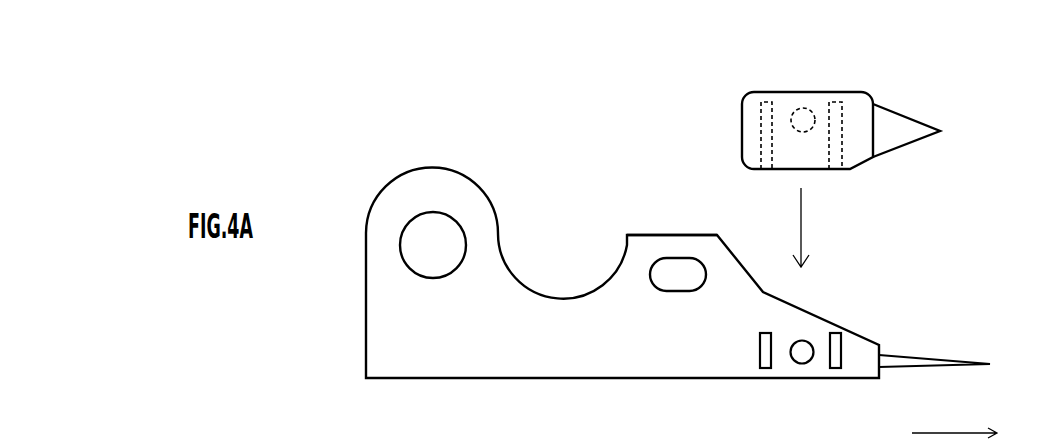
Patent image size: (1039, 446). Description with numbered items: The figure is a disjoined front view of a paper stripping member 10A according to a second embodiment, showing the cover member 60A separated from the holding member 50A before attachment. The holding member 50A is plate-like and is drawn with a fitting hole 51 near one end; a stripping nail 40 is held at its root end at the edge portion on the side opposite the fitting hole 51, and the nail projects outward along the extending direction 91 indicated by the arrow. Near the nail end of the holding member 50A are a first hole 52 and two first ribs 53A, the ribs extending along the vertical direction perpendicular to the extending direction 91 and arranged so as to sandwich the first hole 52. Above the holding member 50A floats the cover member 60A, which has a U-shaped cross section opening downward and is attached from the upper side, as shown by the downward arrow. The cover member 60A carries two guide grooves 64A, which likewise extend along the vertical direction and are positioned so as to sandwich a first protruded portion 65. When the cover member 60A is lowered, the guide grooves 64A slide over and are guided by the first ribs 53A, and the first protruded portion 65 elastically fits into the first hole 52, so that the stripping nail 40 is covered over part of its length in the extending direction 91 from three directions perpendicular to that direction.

The paper stripping member 10A is at (376, 134).
The holding member 50A is at (638, 234).
The fitting hole 51 is at (459, 222).
The first hole 52 is at (798, 355).
The first rib 53A is at (765, 360).
The stripping nail 40 is at (918, 357).
The cover member 60A is at (782, 91).
The guide groove 64A is at (760, 171).
The first protruded portion 65 is at (805, 110).
The extending direction 91 is at (954, 423).